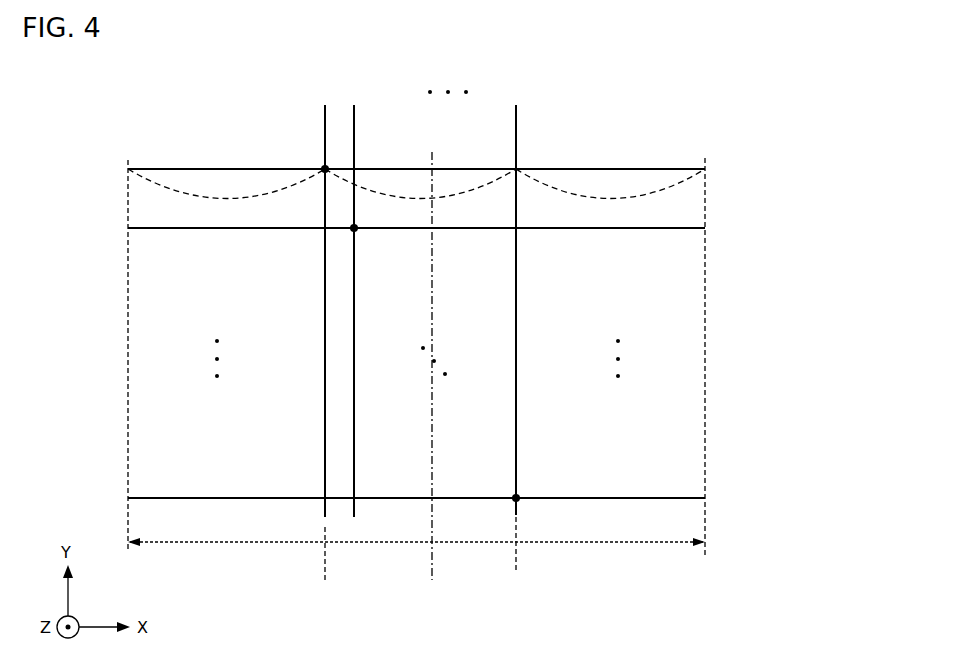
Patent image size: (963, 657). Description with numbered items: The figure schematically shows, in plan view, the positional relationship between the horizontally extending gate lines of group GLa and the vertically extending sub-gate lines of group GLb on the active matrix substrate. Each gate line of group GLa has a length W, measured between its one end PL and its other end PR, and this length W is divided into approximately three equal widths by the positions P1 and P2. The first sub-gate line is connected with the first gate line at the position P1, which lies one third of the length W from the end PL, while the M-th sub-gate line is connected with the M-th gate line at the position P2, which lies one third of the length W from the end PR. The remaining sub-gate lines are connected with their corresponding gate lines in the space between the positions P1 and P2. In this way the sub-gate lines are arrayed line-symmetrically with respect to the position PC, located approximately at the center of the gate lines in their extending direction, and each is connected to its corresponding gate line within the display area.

The one end PL is at (128, 368).
The other end PR is at (704, 369).
The center position PC is at (426, 381).
The position P1 is at (321, 568).
The position P2 is at (510, 563).
The length W is at (416, 534).